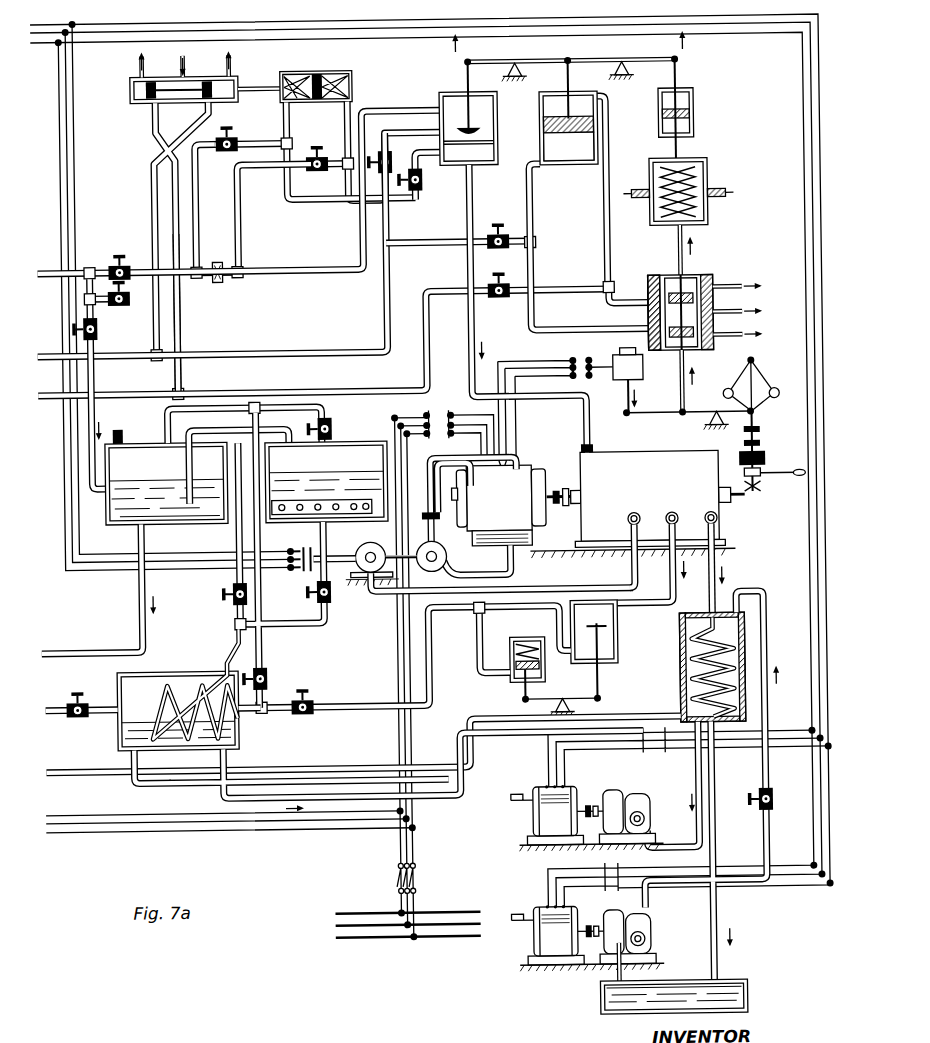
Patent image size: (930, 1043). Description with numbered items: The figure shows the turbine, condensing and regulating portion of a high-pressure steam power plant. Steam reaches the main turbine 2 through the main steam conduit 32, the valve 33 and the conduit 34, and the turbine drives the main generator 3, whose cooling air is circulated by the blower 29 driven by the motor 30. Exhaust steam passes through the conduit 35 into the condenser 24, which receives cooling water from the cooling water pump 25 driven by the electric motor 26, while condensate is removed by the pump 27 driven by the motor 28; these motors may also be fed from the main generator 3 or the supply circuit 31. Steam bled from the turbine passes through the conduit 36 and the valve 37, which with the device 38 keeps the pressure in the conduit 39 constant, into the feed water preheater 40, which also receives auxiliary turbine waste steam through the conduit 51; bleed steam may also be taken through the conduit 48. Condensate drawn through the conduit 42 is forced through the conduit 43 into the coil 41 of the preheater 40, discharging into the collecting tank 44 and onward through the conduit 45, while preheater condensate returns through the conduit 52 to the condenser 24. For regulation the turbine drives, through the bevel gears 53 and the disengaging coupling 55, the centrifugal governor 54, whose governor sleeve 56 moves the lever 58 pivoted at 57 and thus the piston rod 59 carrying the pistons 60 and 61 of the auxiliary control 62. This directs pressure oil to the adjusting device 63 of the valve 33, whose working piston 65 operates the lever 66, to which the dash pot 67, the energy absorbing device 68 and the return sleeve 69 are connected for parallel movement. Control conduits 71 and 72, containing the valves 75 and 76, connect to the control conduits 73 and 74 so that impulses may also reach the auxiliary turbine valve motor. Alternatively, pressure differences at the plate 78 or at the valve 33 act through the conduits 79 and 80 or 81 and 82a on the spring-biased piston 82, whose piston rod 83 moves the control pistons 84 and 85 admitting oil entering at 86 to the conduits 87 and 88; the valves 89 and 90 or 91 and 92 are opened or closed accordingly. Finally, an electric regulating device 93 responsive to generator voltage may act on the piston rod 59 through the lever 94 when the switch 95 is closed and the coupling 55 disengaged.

The main turbine 2 is at (620, 455).
The main generator 3 is at (528, 470).
The condenser 24 is at (678, 668).
The cooling water pump 25 is at (650, 924).
The electric motor 26 is at (535, 910).
The pump 27 is at (637, 790).
The motor 28 is at (527, 826).
The blower 29 is at (425, 566).
The motor 30 is at (362, 580).
The supply circuit 31 is at (333, 908).
The main steam conduit 32 is at (48, 262).
The valve 33 is at (480, 128).
The conduit 34 is at (478, 326).
The conduit 35 is at (716, 562).
The conduit 36 is at (668, 572).
The valve 37 is at (616, 630).
The device 38 is at (510, 640).
The conduit 39 is at (320, 702).
The feed water preheater 40 is at (196, 668).
The coil 41 is at (168, 666).
The conduit 42 is at (694, 765).
The conduit 43 is at (440, 768).
The collecting tank 44 is at (146, 428).
The conduit 45 is at (138, 646).
The conduit 48 is at (60, 762).
The conduit 51 is at (62, 698).
The conduit 52 is at (447, 797).
The bevel gears 53 is at (752, 500).
The centrifugal governor 54 is at (756, 376).
The disengaging coupling 55 is at (768, 458).
The governor sleeve 56 is at (762, 418).
The pivot 57 is at (716, 412).
The lever 58 is at (684, 418).
The piston rod 59 is at (682, 376).
The piston 60 is at (700, 280).
The piston 61 is at (651, 312).
The auxiliary control 62 is at (750, 309).
The adjusting device 63 is at (552, 146).
The working piston 65 is at (549, 127).
The lever 66 is at (590, 62).
The dash pot 67 is at (700, 114).
The energy absorbing device 68 is at (712, 172).
The return sleeve 69 is at (676, 264).
The control conduit 71 is at (50, 345).
The control conduit 72 is at (50, 398).
The control conduit 73 is at (541, 196).
The control conduit 74 is at (606, 190).
The valve 75 is at (502, 222).
The valve 76 is at (500, 270).
The plate 78 is at (221, 258).
The conduit 79 is at (203, 178).
The conduit 80 is at (252, 172).
The conduit 81 is at (298, 200).
The spring-biased piston 82 is at (330, 66).
The conduit 82a is at (356, 200).
The piston rod 83 is at (262, 84).
The control piston 84 is at (208, 96).
The control piston 85 is at (146, 100).
The oil under pressure supply 86 is at (205, 66).
The conduit 87 is at (158, 226).
The conduit 88 is at (181, 312).
The valve 89 is at (240, 133).
The valve 90 is at (329, 149).
The valve 91 is at (398, 152).
The valve 92 is at (428, 181).
The electric regulating device 93 is at (620, 381).
The lever 94 is at (670, 414).
The switch 95 is at (578, 357).